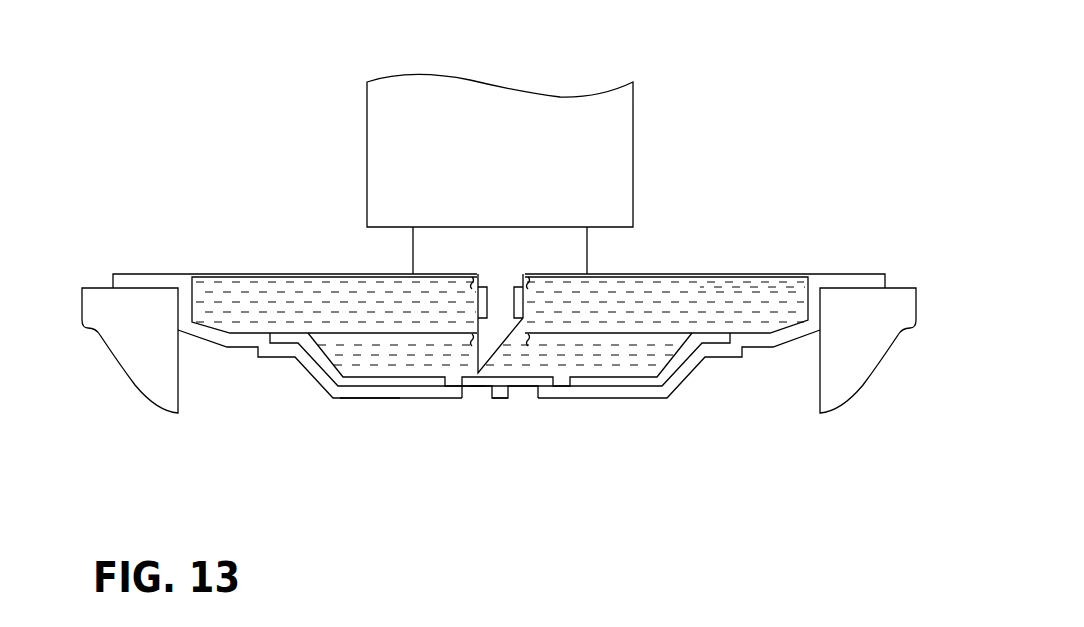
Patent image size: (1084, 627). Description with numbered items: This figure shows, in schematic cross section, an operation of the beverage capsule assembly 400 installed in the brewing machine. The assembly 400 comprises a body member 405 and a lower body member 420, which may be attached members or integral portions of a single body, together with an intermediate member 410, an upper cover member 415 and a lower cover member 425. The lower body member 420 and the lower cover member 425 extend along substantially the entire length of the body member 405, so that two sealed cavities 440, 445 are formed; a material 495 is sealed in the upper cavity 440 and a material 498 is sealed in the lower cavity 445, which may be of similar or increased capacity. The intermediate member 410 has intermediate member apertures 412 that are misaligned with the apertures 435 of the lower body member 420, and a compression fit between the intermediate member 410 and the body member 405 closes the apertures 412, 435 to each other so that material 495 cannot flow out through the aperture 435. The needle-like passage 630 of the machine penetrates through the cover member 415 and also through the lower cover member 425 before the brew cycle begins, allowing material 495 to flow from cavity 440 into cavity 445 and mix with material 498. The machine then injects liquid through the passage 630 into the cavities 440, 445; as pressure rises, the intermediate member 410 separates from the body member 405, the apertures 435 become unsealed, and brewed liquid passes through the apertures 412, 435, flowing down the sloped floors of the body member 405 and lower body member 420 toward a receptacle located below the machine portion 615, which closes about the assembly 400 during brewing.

The assembly 400 is at (226, 152).
The cover member 415 is at (209, 264).
The passage 630 is at (442, 290).
The lower cover member 425 is at (649, 318).
The material 495 is at (728, 288).
The cavity 440 is at (780, 290).
The portion 615 is at (145, 421).
The intermediate member 410 is at (663, 346).
The cavity 445 is at (637, 378).
The material 498 is at (578, 378).
The body member 405 is at (245, 389).
The lower body member 420 is at (348, 407).
The intermediate member apertures 412 is at (463, 380).
The apertures 435 is at (498, 396).